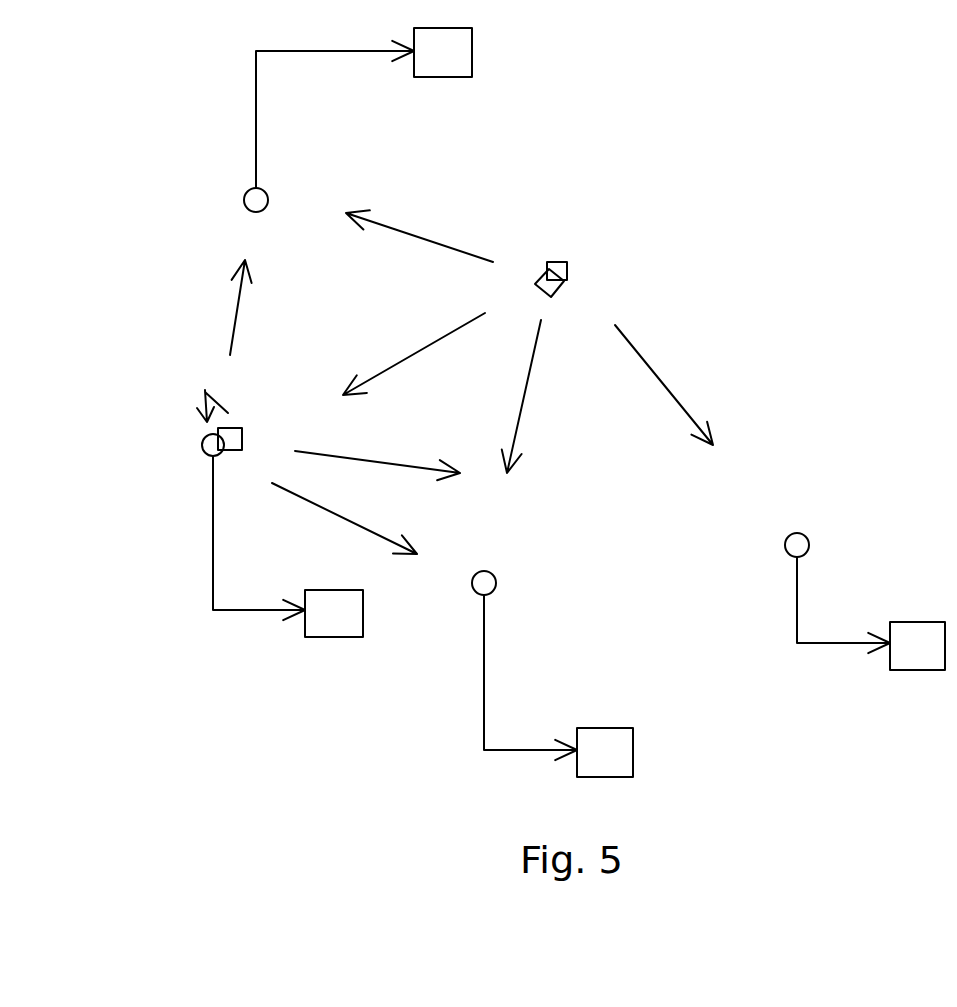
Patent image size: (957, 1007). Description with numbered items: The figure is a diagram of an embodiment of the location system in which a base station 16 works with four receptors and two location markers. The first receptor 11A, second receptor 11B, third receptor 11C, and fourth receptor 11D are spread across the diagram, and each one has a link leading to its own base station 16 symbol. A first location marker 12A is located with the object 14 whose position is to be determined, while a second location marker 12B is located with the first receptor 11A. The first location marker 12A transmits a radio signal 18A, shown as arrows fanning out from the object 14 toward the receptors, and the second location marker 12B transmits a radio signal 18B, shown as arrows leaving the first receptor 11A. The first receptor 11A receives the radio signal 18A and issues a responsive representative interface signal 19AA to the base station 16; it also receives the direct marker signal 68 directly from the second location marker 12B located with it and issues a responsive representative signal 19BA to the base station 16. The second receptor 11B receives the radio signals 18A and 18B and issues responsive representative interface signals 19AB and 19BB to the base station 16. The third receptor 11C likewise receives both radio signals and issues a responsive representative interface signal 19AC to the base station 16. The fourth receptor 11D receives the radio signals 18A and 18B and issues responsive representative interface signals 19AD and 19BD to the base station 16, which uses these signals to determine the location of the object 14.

The base station 16 is at (929, 655).
The first receptor 11A is at (200, 442).
The second receptor 11B is at (477, 572).
The third receptor 11C is at (788, 533).
The fourth receptor 11D is at (244, 200).
The first location marker 12A is at (566, 262).
The second location marker 12B is at (243, 430).
The object 14 is at (540, 273).
The radio signal 18A is at (404, 232).
The radio signal 18B is at (237, 307).
The representative interface signal 19AA is at (163, 538).
The representative signal 19BA is at (212, 525).
The representative interface signal 19AB is at (435, 677).
The representative interface signal 19BB is at (482, 699).
The representative interface signal 19AC is at (795, 590).
The representative interface signal 19AD is at (238, 114).
The representative interface signal 19BD is at (255, 113).
The direct marker signal 68 is at (203, 393).